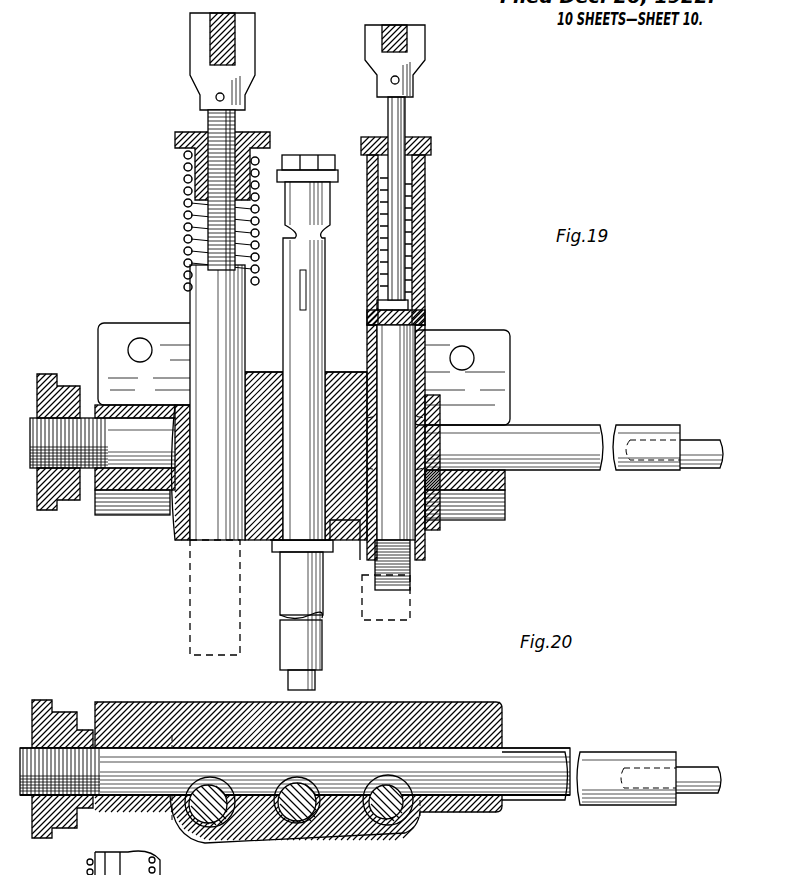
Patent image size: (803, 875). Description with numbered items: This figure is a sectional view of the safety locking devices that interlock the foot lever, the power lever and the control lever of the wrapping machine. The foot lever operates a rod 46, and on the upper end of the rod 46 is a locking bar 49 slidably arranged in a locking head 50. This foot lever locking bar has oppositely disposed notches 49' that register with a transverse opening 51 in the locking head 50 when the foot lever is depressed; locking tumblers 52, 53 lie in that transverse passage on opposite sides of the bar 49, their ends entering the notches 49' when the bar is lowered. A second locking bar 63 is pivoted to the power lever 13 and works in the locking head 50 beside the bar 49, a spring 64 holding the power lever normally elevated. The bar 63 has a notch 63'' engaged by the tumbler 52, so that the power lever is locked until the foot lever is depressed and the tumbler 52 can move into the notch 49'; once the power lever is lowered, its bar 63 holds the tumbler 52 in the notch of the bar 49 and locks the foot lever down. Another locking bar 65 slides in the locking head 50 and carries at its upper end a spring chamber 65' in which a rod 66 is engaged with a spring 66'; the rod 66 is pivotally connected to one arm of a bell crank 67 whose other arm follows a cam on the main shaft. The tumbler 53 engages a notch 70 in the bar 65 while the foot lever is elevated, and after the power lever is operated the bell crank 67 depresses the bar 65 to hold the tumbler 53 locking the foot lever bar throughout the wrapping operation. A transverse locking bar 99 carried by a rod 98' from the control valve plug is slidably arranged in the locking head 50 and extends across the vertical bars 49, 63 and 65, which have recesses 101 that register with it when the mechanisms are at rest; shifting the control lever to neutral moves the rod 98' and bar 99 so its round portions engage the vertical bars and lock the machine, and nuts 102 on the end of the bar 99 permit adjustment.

In FIG. 19, the power lever 13 is at (236, 42).
In FIG. 19, the rod 46 is at (313, 685).
In FIG. 19, the locking bar 49 is at (313, 422).
In FIG. 20, the locking bar 49 is at (298, 823).
In FIG. 19, the notches 49' is at (305, 246).
In FIG. 19, the locking head 50 is at (180, 357).
In FIG. 20, the locking head 50 is at (413, 718).
In FIG. 19, the transverse opening 51 is at (340, 372).
In FIG. 19, the locking tumbler 52 is at (260, 396).
In FIG. 19, the locking tumbler 53 is at (355, 396).
In FIG. 19, the locking bar 63 is at (197, 460).
In FIG. 20, the locking bar 63 is at (210, 825).
In FIG. 19, the notch 63'' is at (218, 396).
In FIG. 19, the spring 64 is at (186, 194).
In FIG. 19, the locking bar 65 is at (415, 460).
In FIG. 20, the locking bar 65 is at (394, 820).
In FIG. 19, the spring chamber 65' is at (424, 231).
In FIG. 19, the rod 66 is at (421, 198).
In FIG. 19, the spring 66' is at (445, 171).
In FIG. 19, the bell crank 67 is at (407, 50).
In FIG. 19, the notch 70 is at (391, 416).
In FIG. 19, the rod 98' is at (701, 437).
In FIG. 20, the rod 98' is at (699, 761).
In FIG. 19, the locking bar 99 is at (565, 440).
In FIG. 20, the locking bar 99 is at (550, 762).
In FIG. 20, the recesses 101 is at (240, 830).
In FIG. 19, the nuts 102 is at (60, 378).
In FIG. 20, the nuts 102 is at (66, 714).